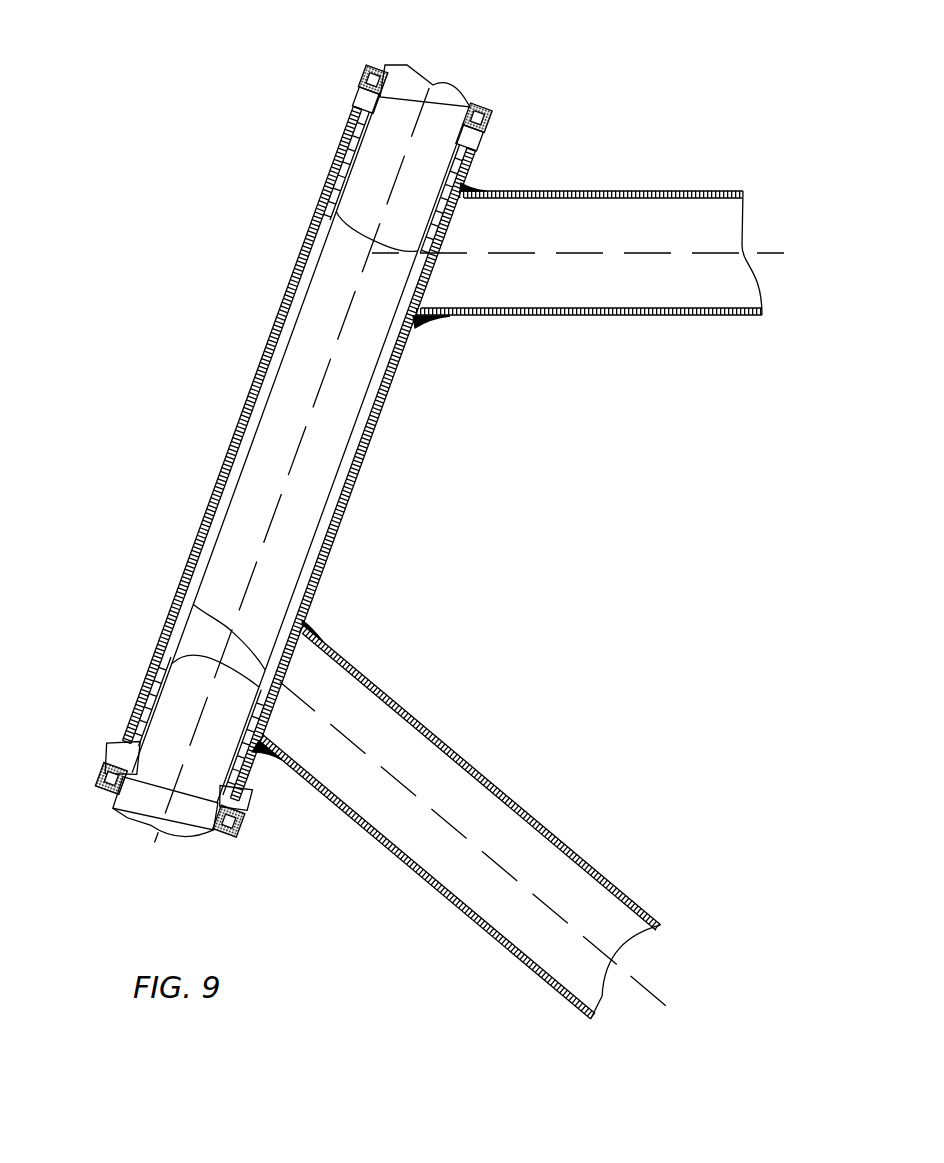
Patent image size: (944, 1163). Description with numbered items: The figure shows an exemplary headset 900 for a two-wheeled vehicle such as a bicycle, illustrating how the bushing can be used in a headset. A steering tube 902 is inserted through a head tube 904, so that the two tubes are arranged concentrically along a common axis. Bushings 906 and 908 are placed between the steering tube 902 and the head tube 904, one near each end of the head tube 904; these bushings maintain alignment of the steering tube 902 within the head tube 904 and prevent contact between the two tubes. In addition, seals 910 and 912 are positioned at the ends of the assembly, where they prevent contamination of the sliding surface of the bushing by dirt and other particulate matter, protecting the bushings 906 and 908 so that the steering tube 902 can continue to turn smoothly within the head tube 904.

The headset 900 is at (690, 104).
The steering tube 902 is at (460, 85).
The head tube 904 is at (290, 278).
The bushing 906 is at (352, 110).
The bushing 908 is at (143, 686).
The seal 910 is at (495, 122).
The seal 912 is at (240, 837).